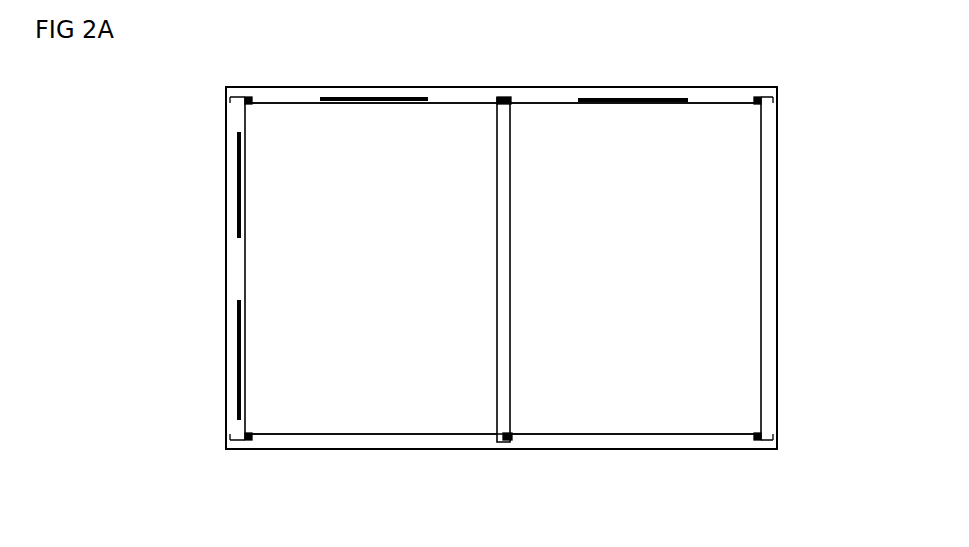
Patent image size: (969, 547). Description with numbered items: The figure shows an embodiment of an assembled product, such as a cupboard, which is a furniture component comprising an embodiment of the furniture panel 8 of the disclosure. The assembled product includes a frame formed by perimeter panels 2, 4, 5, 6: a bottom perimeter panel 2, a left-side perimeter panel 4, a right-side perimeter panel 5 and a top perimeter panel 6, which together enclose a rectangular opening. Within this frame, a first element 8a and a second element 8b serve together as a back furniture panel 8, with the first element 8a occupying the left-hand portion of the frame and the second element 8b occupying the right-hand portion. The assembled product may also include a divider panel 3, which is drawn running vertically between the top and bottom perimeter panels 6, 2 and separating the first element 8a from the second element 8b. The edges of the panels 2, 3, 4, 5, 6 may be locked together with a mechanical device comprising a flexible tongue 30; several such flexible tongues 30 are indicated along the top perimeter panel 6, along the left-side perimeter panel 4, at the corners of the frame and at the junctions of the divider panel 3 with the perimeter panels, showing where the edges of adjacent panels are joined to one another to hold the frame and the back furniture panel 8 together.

The perimeter panel 2 is at (543, 440).
The divider panel 3 is at (503, 405).
The perimeter panel 4 is at (240, 272).
The perimeter panel 5 is at (768, 268).
The perimeter panel 6 is at (712, 98).
The furniture panel 8 is at (447, 303).
The first element 8a is at (374, 268).
The second element 8b is at (632, 268).
The flexible tongue 30 is at (245, 100).